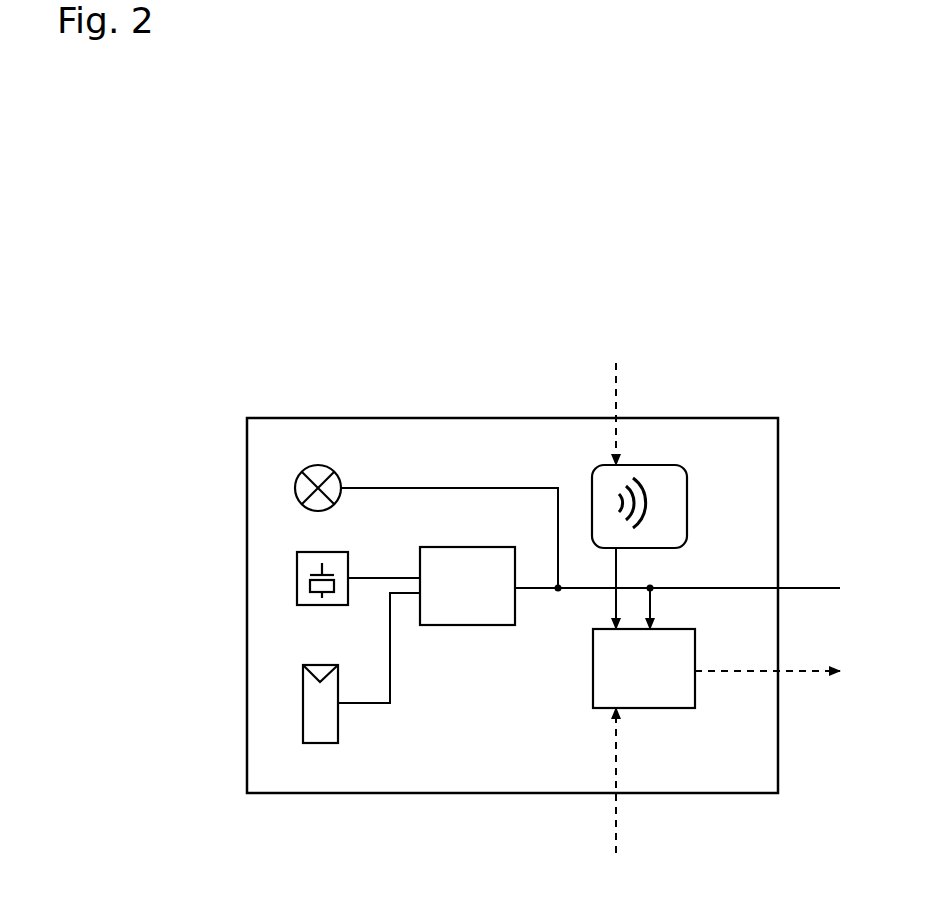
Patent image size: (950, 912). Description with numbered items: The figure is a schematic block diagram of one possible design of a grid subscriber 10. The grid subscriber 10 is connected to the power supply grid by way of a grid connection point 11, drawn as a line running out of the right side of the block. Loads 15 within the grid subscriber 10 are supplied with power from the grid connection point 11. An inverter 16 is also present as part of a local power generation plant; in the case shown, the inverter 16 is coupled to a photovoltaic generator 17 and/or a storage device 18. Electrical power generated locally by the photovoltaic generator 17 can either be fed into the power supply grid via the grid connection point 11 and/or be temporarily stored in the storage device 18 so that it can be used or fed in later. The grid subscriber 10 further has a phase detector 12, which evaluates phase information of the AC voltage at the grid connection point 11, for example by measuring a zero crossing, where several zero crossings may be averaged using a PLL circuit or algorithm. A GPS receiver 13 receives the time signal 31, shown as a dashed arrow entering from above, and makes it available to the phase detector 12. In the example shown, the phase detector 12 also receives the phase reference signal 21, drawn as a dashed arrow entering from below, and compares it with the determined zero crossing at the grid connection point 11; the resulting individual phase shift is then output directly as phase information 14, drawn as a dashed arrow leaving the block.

The grid subscriber 10 is at (415, 417).
The grid connection point 11 is at (780, 587).
The phase detector 12 is at (647, 709).
The GPS receiver 13 is at (688, 513).
The phase information 14 is at (790, 673).
The loads 15 is at (297, 493).
The inverter 16 is at (460, 626).
The photovoltaic generator 17 is at (305, 707).
The storage device 18 is at (297, 588).
The phase reference signal 21 is at (615, 832).
The time signal 31 is at (618, 383).